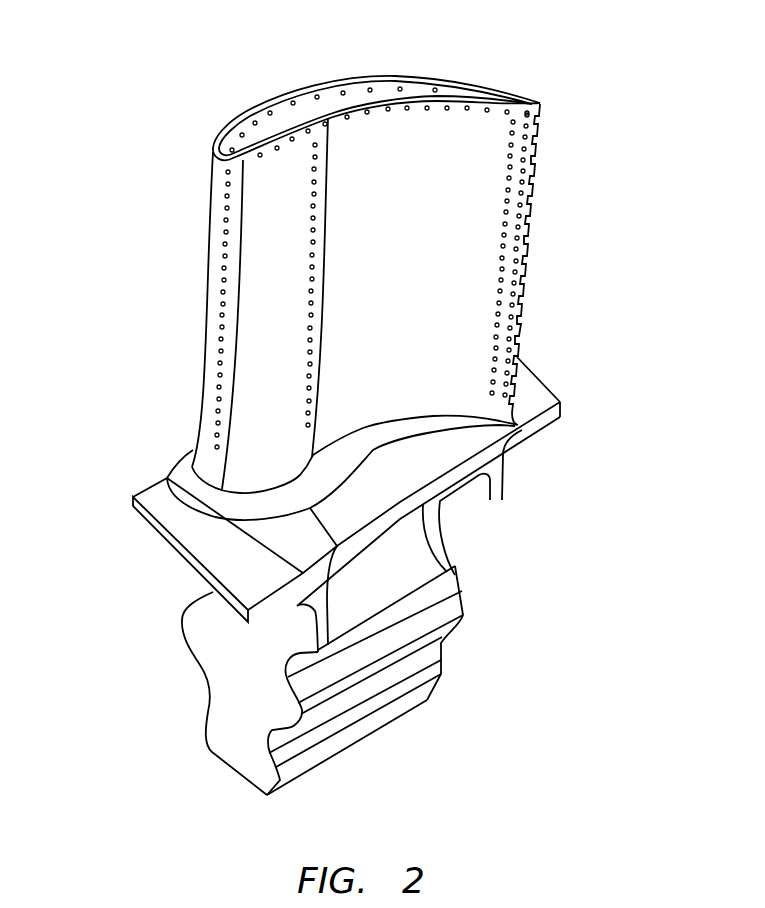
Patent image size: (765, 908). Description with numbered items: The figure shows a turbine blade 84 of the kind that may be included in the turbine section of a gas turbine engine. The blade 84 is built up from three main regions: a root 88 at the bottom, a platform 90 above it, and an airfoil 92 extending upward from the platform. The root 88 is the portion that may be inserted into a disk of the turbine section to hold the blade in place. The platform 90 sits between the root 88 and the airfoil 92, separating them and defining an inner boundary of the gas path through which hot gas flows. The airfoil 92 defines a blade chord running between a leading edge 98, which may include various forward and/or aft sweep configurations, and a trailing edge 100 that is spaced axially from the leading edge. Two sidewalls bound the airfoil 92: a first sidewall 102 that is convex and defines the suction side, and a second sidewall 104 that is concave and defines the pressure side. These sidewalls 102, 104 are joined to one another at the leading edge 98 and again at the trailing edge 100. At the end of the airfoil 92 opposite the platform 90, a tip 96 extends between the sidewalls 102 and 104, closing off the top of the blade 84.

The turbine blade 84 is at (122, 100).
The root 88 is at (490, 585).
The platform 90 is at (565, 383).
The airfoil 92 is at (220, 244).
The tip 96 is at (298, 100).
The leading edge 98 is at (203, 353).
The trailing edge 100 is at (548, 270).
The first sidewall 102 is at (222, 117).
The second sidewall 104 is at (500, 152).